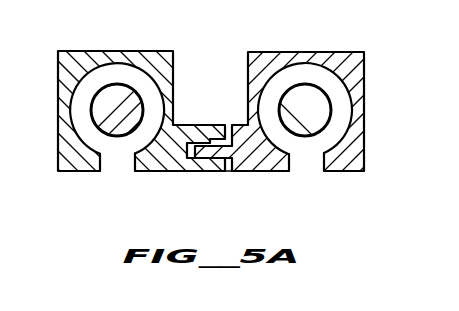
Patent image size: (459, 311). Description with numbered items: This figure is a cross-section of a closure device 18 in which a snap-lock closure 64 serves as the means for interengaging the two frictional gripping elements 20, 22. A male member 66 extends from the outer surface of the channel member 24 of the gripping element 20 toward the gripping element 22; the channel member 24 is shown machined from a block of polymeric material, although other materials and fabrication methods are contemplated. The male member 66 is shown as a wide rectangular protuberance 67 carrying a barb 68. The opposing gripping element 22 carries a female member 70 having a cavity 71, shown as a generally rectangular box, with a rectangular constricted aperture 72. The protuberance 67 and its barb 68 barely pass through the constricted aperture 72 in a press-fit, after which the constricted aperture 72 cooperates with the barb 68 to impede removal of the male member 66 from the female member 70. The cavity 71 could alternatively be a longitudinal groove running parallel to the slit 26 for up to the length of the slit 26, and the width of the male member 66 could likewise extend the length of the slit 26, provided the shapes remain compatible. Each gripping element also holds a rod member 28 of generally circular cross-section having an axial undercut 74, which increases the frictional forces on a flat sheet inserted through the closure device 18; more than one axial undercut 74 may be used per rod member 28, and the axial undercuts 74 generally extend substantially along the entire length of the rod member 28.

The closure device 18 is at (234, 186).
The gripping element 20 is at (367, 89).
The gripping element 22 is at (56, 83).
The channel member 24 is at (72, 145).
The slit 26 is at (118, 165).
The rod member 28 is at (115, 128).
The snap-lock closure 64 is at (203, 178).
The male member 66 is at (240, 142).
The protuberance 67 is at (220, 174).
The barb 68 is at (205, 140).
The female member 70 is at (185, 137).
The cavity 71 is at (163, 172).
The constricted aperture 72 is at (218, 128).
The axial undercut 74 is at (108, 115).